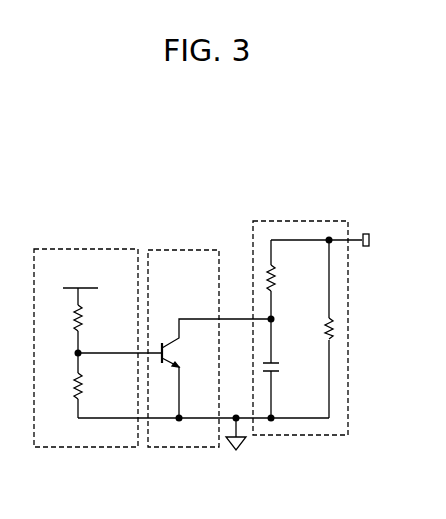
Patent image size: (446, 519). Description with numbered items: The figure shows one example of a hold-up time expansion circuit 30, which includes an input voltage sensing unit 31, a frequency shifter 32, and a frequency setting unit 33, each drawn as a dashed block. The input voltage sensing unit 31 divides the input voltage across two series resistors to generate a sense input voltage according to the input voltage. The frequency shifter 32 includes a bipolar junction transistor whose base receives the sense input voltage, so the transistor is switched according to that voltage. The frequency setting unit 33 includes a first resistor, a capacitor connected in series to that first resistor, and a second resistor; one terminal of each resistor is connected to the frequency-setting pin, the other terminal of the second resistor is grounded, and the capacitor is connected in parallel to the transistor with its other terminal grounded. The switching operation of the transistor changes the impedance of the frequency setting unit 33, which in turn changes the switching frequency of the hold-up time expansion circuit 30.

The hold-up time expansion circuit 30 is at (355, 190).
The input voltage sensing unit 31 is at (95, 449).
The frequency shifter 32 is at (200, 449).
The frequency setting unit 33 is at (318, 437).